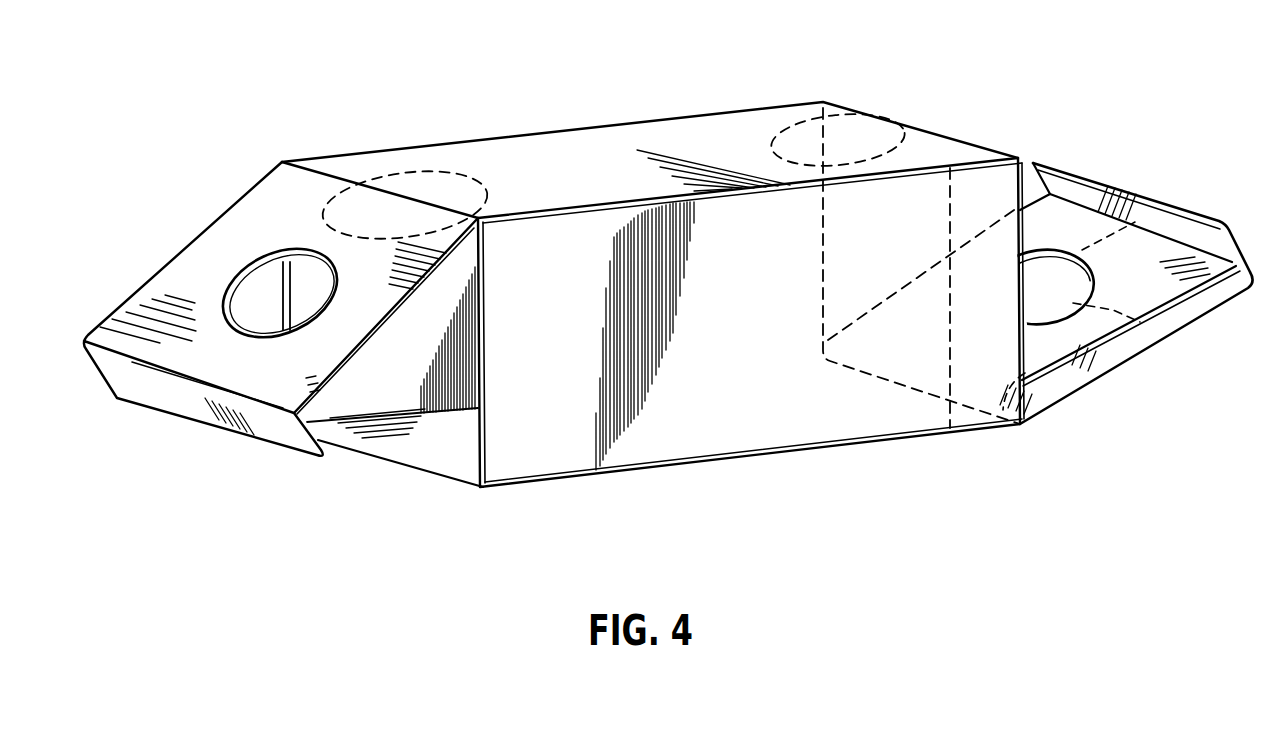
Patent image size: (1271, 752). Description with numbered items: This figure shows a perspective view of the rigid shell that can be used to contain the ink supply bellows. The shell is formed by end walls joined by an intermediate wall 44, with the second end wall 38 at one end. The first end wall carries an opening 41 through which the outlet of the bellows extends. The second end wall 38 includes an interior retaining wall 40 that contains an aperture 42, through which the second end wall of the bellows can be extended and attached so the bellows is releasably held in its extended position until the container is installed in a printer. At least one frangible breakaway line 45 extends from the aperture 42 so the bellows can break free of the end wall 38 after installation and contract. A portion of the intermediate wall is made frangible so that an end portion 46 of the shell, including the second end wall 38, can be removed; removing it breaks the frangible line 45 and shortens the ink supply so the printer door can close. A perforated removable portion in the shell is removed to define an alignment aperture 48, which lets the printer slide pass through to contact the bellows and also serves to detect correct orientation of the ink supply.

The second end wall 38 is at (1118, 264).
The interior retaining wall 40 is at (1058, 335).
The opening 41 is at (242, 277).
The aperture 42 is at (1055, 250).
The intermediate wall 44 is at (678, 134).
The frangible breakaway line 45 is at (1130, 183).
The end portion 46 is at (899, 158).
The alignment aperture 48 is at (455, 185).